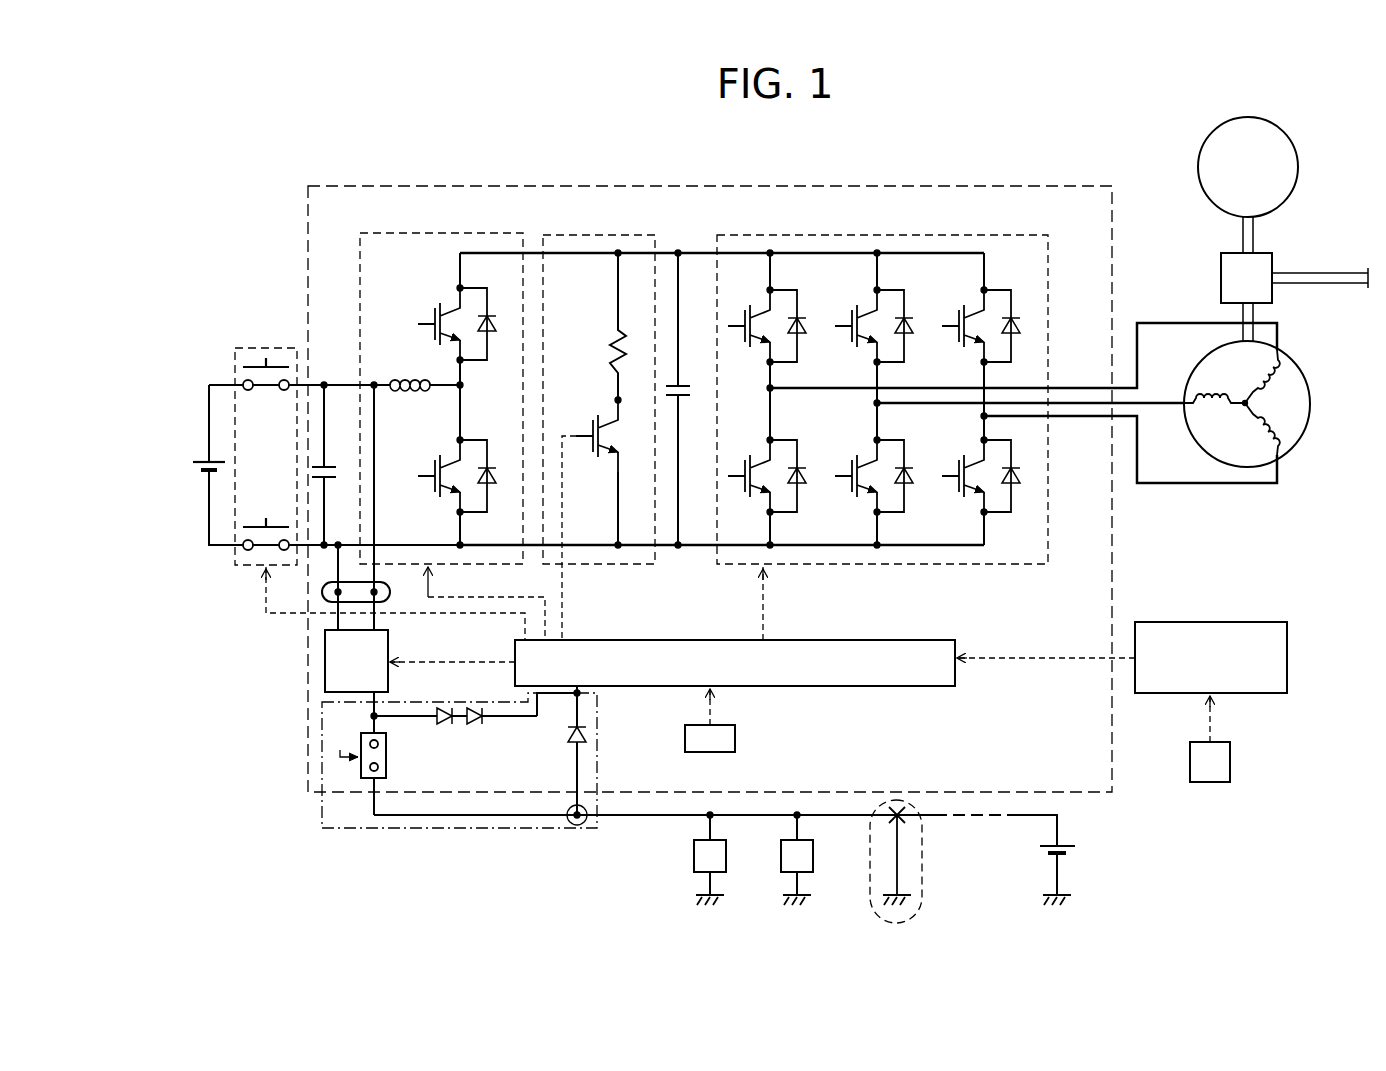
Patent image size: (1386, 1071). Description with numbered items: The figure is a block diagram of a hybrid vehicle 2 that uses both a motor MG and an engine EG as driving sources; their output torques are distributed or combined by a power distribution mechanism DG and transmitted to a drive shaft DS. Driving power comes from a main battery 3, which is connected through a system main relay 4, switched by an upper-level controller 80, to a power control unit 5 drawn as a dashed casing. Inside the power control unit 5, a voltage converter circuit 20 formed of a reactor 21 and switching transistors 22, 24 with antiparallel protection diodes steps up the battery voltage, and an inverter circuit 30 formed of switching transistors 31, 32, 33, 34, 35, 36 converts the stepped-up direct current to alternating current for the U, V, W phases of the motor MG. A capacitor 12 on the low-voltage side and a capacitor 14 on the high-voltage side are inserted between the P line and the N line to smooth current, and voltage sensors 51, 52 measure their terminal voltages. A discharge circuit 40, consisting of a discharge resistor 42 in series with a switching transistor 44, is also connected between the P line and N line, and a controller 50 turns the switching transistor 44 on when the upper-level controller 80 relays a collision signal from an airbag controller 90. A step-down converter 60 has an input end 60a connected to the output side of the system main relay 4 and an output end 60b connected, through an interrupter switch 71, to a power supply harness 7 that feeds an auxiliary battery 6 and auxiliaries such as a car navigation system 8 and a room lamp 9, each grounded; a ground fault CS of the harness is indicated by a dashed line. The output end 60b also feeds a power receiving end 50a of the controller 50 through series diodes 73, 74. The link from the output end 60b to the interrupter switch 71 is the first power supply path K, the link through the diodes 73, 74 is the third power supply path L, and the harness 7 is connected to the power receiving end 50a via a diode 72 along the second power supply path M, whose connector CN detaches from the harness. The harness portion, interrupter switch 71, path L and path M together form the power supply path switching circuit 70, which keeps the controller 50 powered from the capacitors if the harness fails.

The hybrid vehicle 2 is at (703, 449).
The main battery 3 is at (205, 460).
The system main relay 4 is at (258, 348).
The power control unit 5 is at (996, 186).
The auxiliary battery 6 is at (1076, 838).
The power supply harness 7 is at (640, 818).
The car navigation system 8 is at (726, 862).
The room lamp 9 is at (813, 862).
The capacitor 12 is at (326, 467).
The capacitor 14 is at (679, 386).
The voltage converter circuit 20 is at (452, 388).
The reactor 21 is at (405, 383).
The switching transistor 22 is at (445, 310).
The switching transistor 24 is at (445, 462).
The inverter circuit 30 is at (882, 388).
The switching transistor 31 is at (752, 312).
The switching transistor 32 is at (752, 462).
The switching transistor 33 is at (858, 312).
The switching transistor 34 is at (858, 462).
The switching transistor 35 is at (965, 312).
The switching transistor 36 is at (965, 462).
The discharge circuit 40 is at (599, 388).
The discharge resistor 42 is at (615, 335).
The switching transistor 44 is at (594, 420).
The controller 50 is at (878, 687).
The power receiving end 50a is at (584, 696).
The voltage sensor 51 is at (767, 721).
The voltage sensor 52 is at (735, 740).
The step-down converter 60 is at (325, 665).
The input end 60a is at (322, 592).
The output end 60b is at (370, 717).
The power supply path switching circuit 70 is at (320, 822).
The interrupter switch 71 is at (361, 762).
The diode 72 is at (585, 745).
The diode 73 is at (445, 727).
The diode 74 is at (475, 727).
The upper-level controller 80 is at (1258, 622).
The airbag controller 90 is at (1230, 762).
The P line P is at (960, 253).
The N line N is at (905, 558).
The first power supply path K is at (338, 751).
The third power supply path L is at (537, 708).
The second power supply path M is at (586, 734).
The connector CN is at (578, 827).
The ground fault CS is at (922, 878).
The engine EG is at (1299, 165).
The power distribution mechanism DG is at (1272, 258).
The drive shaft DS is at (1350, 270).
The motor MG is at (1302, 356).
The U phase U is at (1029, 363).
The V phase V is at (1059, 387).
The W phase W is at (1130, 443).